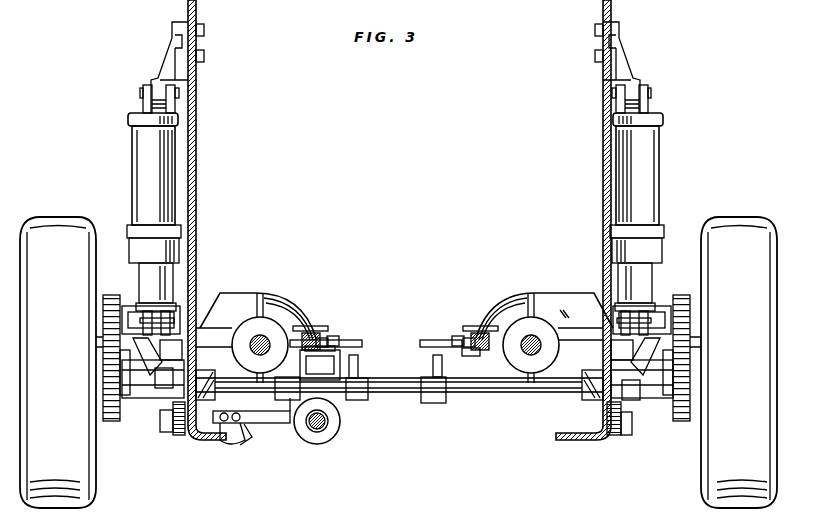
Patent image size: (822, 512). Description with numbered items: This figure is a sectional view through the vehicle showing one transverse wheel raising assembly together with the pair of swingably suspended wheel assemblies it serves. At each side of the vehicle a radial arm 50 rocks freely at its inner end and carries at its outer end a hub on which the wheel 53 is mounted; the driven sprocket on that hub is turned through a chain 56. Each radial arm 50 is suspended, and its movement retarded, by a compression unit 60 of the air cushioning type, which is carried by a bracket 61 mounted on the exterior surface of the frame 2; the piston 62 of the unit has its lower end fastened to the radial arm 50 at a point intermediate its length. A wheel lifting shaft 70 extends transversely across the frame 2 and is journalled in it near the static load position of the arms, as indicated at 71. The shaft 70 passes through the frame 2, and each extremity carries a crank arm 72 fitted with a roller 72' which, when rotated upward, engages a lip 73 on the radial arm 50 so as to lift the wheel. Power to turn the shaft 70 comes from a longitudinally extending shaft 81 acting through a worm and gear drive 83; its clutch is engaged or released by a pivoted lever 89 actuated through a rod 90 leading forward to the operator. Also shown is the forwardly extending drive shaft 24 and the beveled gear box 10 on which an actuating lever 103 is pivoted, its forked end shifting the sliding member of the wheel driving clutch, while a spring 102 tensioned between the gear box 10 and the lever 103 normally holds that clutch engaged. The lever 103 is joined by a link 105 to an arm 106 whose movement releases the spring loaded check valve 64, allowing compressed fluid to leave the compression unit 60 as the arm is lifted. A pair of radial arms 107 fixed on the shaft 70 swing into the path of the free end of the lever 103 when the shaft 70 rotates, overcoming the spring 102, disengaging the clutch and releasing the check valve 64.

The frame 2 is at (197, 154).
The beveled gear box 10 is at (266, 292).
The forwardly extending drive shaft 24 is at (258, 340).
The radial arm 50 is at (160, 400).
The wheel 53 is at (52, 217).
The chain 56 is at (112, 422).
The compression unit 60 is at (140, 156).
The bracket 61 is at (155, 68).
The piston 62 is at (147, 271).
The spring loaded check valve 64 is at (314, 326).
The shaft 70 is at (246, 385).
The journal point 71 is at (207, 378).
The crank arm 72 is at (397, 441).
The roller 72' is at (402, 443).
The lip 73 is at (163, 389).
The longitudinally extending shaft 81 is at (317, 430).
The worm and gear drive 83 is at (339, 435).
The pivoted lever 89 is at (271, 424).
The rod 90 is at (233, 423).
The spring 102 is at (338, 340).
The actuating lever 103 is at (364, 344).
The link 105 is at (326, 330).
The arm 106 is at (313, 331).
The radial arms 107 is at (360, 368).